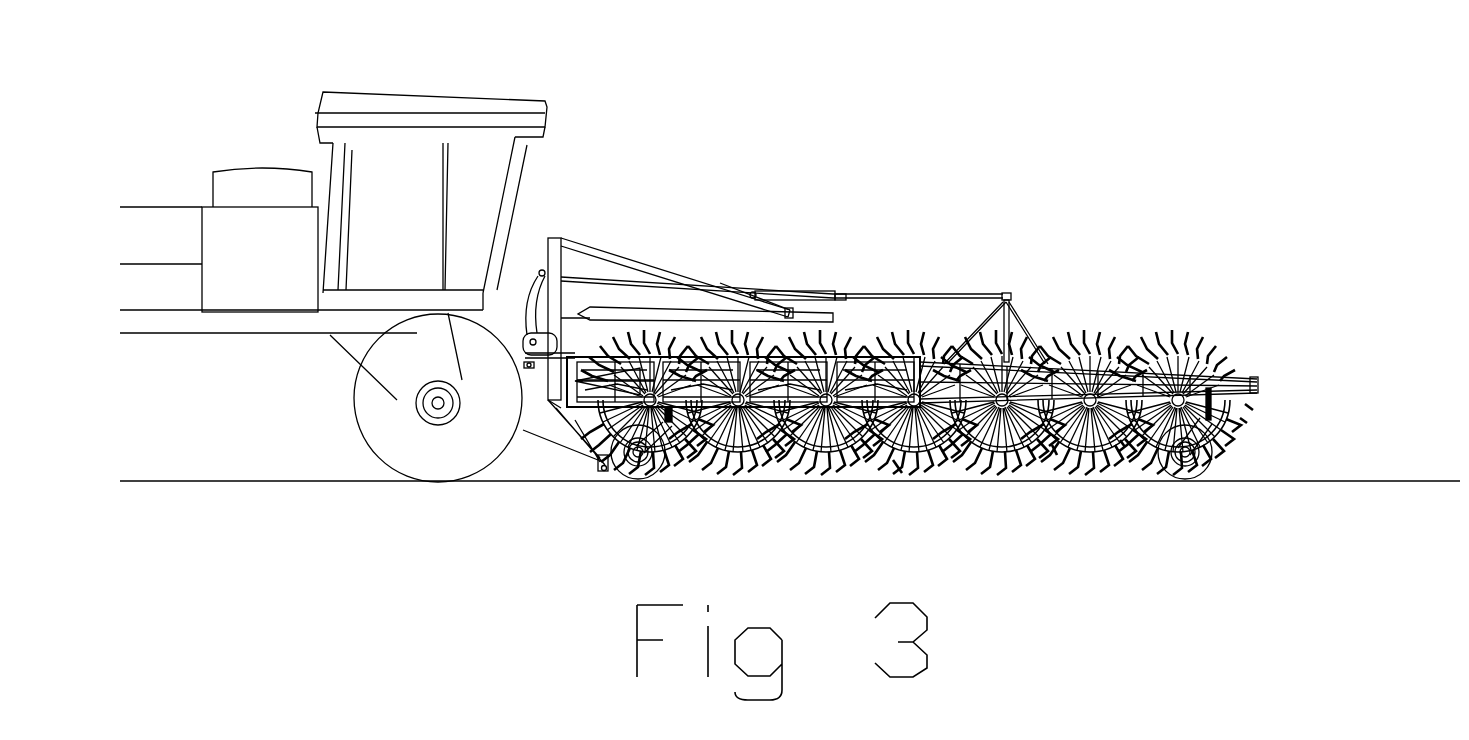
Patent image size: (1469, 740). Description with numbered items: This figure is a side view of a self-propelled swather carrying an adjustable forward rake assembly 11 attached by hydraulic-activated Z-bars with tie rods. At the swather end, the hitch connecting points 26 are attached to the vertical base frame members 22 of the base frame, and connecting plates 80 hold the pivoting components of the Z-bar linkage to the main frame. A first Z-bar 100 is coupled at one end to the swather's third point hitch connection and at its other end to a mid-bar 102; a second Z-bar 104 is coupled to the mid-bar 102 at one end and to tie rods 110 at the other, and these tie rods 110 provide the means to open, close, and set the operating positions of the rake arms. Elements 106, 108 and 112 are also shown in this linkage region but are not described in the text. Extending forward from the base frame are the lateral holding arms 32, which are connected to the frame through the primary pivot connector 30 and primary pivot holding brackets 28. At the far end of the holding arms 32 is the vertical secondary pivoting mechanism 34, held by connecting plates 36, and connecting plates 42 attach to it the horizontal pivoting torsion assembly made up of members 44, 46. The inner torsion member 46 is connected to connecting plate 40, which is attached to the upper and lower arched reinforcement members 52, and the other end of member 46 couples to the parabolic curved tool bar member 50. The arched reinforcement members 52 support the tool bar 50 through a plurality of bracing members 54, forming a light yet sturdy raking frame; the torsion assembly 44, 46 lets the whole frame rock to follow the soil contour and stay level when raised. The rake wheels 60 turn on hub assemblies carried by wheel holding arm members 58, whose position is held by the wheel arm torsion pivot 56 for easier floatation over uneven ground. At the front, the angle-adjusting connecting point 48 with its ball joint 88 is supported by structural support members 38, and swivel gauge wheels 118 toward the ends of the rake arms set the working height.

The rake assembly 11 is at (798, 103).
The base frame members 22 is at (553, 240).
The connecting points 26 is at (528, 368).
The primary pivot holding brackets 28 is at (603, 468).
The primary pivot connector 30 is at (572, 345).
The lateral holding arms 32 is at (765, 407).
The secondary pivoting mechanism 34 is at (890, 332).
The connecting plates 36 is at (952, 337).
The structural support members 38 is at (1032, 315).
The connecting plate 40 is at (902, 473).
The connecting plates 42 is at (880, 322).
The torsion assembly member 44 is at (910, 332).
The inner torsion member 46 is at (934, 336).
The angle-adjusting connecting point 48 is at (1012, 303).
The parabolic curved tool bar member 50 is at (1125, 447).
The arched reinforcement members 52 is at (1219, 463).
The bracing members 54 is at (1057, 455).
The wheel arm torsion pivot 56 is at (1253, 410).
The wheel holding arm member 58 is at (1247, 423).
The rake wheels 60 is at (1177, 337).
The connecting plates 80 is at (552, 352).
The ball joint 88 is at (1008, 295).
The first Z-bar 100 is at (537, 313).
The mid-bar 102 is at (738, 296).
The second Z-bar 104 is at (757, 293).
The hydraulic cylinder 106 is at (831, 290).
The cylinder rod 108 is at (843, 292).
The tie rods 110 is at (855, 293).
The shield bar 112 is at (653, 310).
The swivel gauge wheels 118 is at (1190, 473).